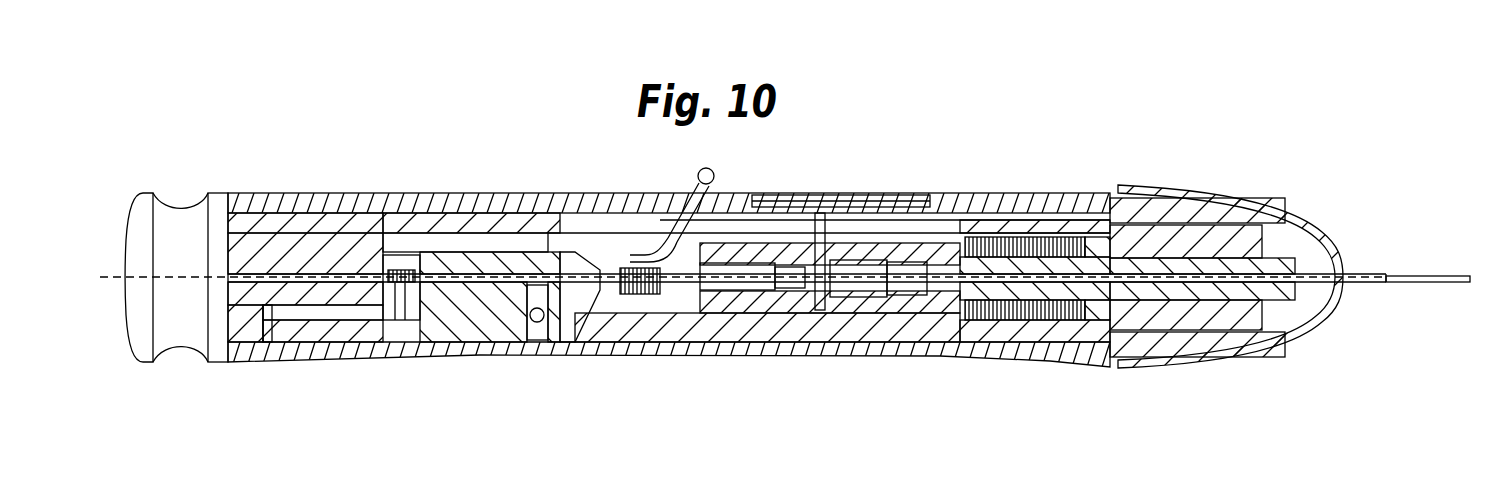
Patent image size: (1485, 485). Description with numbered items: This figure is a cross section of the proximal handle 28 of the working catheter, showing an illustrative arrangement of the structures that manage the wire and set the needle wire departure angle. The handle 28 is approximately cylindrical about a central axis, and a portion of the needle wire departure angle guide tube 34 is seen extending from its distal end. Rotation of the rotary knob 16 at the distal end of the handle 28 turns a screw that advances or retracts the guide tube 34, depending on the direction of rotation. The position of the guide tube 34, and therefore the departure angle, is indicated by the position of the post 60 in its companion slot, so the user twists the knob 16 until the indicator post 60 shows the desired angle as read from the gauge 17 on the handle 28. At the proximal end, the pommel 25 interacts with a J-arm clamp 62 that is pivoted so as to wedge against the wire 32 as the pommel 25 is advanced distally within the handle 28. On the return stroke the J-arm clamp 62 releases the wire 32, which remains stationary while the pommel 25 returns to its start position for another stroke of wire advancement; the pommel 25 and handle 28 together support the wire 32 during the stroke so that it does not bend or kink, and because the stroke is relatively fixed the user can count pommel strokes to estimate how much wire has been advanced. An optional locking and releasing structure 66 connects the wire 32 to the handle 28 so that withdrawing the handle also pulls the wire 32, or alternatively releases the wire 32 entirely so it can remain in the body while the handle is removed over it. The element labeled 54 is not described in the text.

The rotary knob 16 is at (1160, 187).
The gauge 17 is at (786, 193).
The pommel 25 is at (177, 347).
The handle 28 is at (958, 152).
The wire 32 is at (496, 285).
The needle wire departure angle guide tube 34 is at (1360, 270).
The detent block 54 is at (414, 302).
The post 60 is at (820, 232).
The J-arm clamp 62 is at (428, 259).
The locking and releasing structure 66 is at (716, 166).